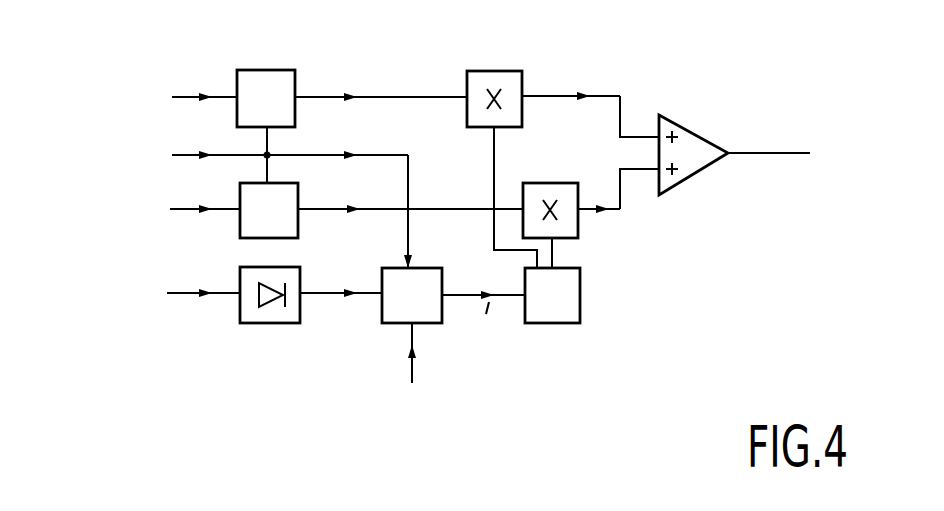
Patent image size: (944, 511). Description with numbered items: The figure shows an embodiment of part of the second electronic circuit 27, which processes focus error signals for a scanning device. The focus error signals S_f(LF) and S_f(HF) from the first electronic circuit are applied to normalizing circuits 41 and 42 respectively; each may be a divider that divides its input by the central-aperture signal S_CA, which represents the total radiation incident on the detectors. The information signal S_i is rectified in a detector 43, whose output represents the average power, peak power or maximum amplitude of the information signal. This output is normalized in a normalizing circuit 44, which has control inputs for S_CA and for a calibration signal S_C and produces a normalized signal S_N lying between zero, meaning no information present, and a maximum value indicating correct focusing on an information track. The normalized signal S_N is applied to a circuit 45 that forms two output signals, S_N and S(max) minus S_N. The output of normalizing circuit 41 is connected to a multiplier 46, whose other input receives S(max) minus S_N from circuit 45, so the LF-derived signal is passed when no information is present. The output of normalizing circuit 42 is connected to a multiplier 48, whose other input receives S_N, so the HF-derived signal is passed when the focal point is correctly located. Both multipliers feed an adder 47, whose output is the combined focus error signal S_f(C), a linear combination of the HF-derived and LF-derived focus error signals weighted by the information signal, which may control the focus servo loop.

The second electronic circuit 27 is at (420, 25).
The normalizing circuit 41 is at (259, 69).
The normalizing circuit 42 is at (298, 197).
The detector 43 is at (290, 266).
The normalizing circuit 44 is at (452, 257).
The circuit 45 is at (580, 285).
The multiplier 46 is at (497, 71).
The adder 47 is at (695, 131).
The multiplier 48 is at (552, 183).